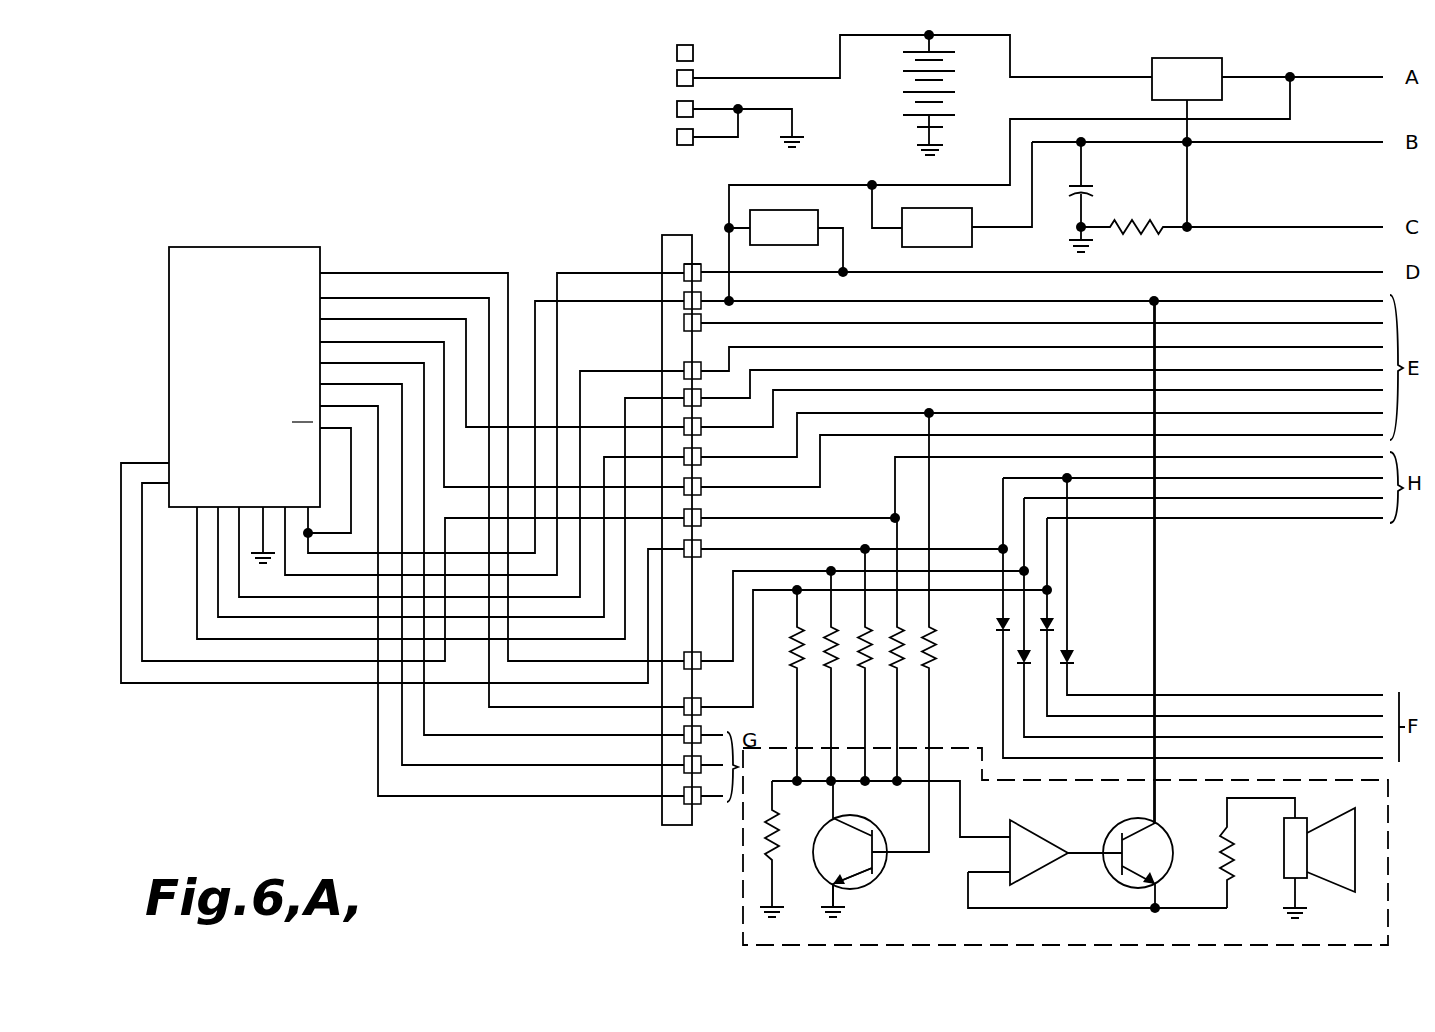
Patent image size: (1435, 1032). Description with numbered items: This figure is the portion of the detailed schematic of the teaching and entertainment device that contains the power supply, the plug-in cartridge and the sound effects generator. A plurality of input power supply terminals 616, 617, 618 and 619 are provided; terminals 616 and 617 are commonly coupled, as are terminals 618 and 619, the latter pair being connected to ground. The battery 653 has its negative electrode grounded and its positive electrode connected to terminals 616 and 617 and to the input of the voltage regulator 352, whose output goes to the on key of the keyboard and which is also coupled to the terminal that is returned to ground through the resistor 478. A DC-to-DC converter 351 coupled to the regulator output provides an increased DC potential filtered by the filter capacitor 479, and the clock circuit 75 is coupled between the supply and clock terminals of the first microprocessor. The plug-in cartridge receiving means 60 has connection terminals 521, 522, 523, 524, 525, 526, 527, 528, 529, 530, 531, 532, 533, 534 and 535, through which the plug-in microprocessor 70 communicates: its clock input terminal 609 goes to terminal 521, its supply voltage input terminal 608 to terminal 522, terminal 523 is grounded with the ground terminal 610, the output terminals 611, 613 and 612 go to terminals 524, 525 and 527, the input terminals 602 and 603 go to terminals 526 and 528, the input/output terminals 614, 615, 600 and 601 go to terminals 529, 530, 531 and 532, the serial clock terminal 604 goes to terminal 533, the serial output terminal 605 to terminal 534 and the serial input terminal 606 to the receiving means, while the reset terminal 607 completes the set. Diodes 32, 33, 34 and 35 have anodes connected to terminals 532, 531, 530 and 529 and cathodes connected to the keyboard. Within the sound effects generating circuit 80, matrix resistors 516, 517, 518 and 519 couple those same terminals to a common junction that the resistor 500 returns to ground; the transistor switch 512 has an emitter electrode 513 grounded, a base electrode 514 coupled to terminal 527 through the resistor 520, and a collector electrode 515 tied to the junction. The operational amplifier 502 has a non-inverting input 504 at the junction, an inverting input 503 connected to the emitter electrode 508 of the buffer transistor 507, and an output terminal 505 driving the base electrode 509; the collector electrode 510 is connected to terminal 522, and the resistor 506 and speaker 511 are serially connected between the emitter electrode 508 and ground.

The plug-in microprocessor 70 is at (169, 282).
The plug-in cartridge receiving means 60 is at (663, 821).
The sound effects generating circuit 80 is at (743, 858).
The clock circuit 75 is at (800, 210).
The DC-to-DC converter 351 is at (950, 208).
The voltage regulator 352 is at (1160, 58).
The battery 653 is at (912, 120).
The filter capacitor 479 is at (1090, 182).
The resistor 478 is at (1128, 222).
The input power supply terminal 616 is at (677, 77).
The input power supply terminal 617 is at (677, 52).
The input power supply terminal 618 is at (677, 108).
The input power supply terminal 619 is at (677, 136).
The input/output terminal 600 is at (340, 272).
The input/output terminal 601 is at (340, 297).
The input terminal 602 is at (340, 318).
The input terminal 603 is at (340, 341).
The serial clock terminal 604 is at (340, 362).
The serial output terminal 605 is at (340, 383).
The serial input terminal 606 is at (340, 405).
The reset terminal 607 is at (370, 430).
The supply voltage input terminal 608 is at (306, 556).
The clock input terminal 609 is at (303, 577).
The ground terminal 610 is at (275, 540).
The output terminal 611 is at (239, 573).
The output terminal 612 is at (218, 553).
The output terminal 613 is at (197, 546).
The input/output terminal 614 is at (168, 483).
The input/output terminal 615 is at (160, 463).
The connection terminal 521 is at (692, 264).
The connection terminal 522 is at (701, 304).
The connection terminal 523 is at (701, 327).
The connection terminal 524 is at (701, 375).
The connection terminal 525 is at (701, 401).
The connection terminal 526 is at (701, 430).
The connection terminal 527 is at (701, 460).
The connection terminal 528 is at (701, 490).
The connection terminal 529 is at (701, 521).
The connection terminal 530 is at (701, 552).
The connection terminal 531 is at (701, 652).
The connection terminal 532 is at (720, 688).
The connection terminal 533 is at (684, 730).
The connection terminal 534 is at (684, 760).
The connection terminal 535 is at (684, 792).
The matrix resistor 516 is at (790, 656).
The matrix resistor 517 is at (828, 640).
The matrix resistor 518 is at (860, 656).
The matrix resistor 519 is at (894, 640).
The resistor 520 is at (936, 662).
The diode 32 is at (996, 624).
The diode 33 is at (1017, 656).
The diode 34 is at (1054, 624).
The diode 35 is at (1074, 658).
The resistor 500 is at (774, 826).
The collector electrode 515 is at (834, 806).
The base electrode 514 is at (905, 854).
The transistor switch 512 is at (852, 890).
The emitter electrode 513 is at (838, 900).
The inverting input 503 is at (990, 872).
The non-inverting input 504 is at (972, 836).
The output terminal 505 is at (1066, 818).
The operational amplifier 502 is at (1038, 878).
The base electrode 509 is at (1092, 848).
The collector electrode 510 is at (1156, 808).
The buffer transistor 507 is at (1162, 832).
The emitter electrode 508 is at (1160, 890).
The resistor 506 is at (1232, 856).
The speaker 511 is at (1282, 870).